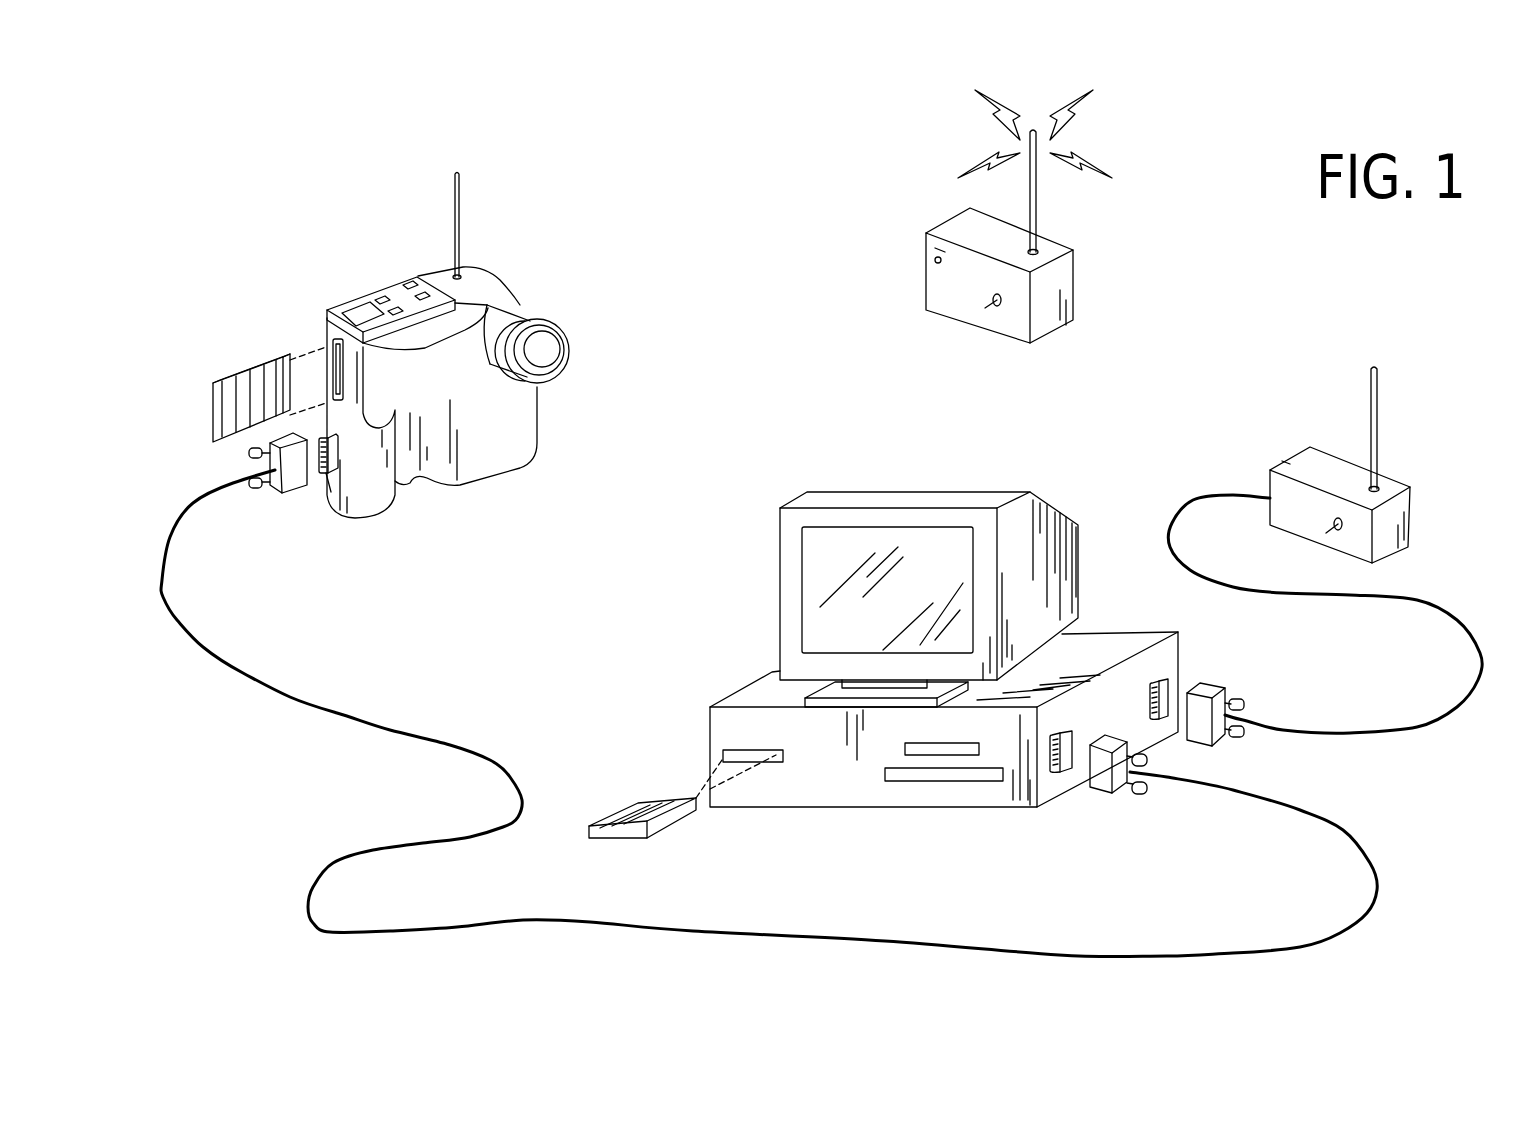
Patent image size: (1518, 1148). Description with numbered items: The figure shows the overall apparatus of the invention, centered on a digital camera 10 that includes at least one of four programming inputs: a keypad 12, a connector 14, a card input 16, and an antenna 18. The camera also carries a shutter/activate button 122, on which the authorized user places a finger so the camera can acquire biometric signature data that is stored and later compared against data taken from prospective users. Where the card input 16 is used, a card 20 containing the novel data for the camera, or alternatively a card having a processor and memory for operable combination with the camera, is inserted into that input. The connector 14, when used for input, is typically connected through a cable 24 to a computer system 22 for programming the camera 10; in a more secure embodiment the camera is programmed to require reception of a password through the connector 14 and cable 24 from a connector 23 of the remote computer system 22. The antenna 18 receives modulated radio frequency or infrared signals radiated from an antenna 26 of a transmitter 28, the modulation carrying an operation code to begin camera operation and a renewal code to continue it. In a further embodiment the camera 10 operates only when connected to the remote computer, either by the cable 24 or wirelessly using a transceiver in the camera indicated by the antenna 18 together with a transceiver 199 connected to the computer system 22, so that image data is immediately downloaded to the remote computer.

The digital camera 10 is at (534, 269).
The keypad 12 is at (397, 293).
The shutter/activate button 122 is at (357, 297).
The connector 14 is at (326, 493).
The card input 16 is at (325, 343).
The antenna 18 is at (480, 193).
The card 20 is at (243, 372).
The computer system 22 is at (731, 478).
The connector 23 is at (1060, 774).
The cable 24 is at (397, 718).
The antenna 26 is at (1038, 198).
The transmitter 28 is at (1110, 288).
The transceiver 199 is at (1399, 478).